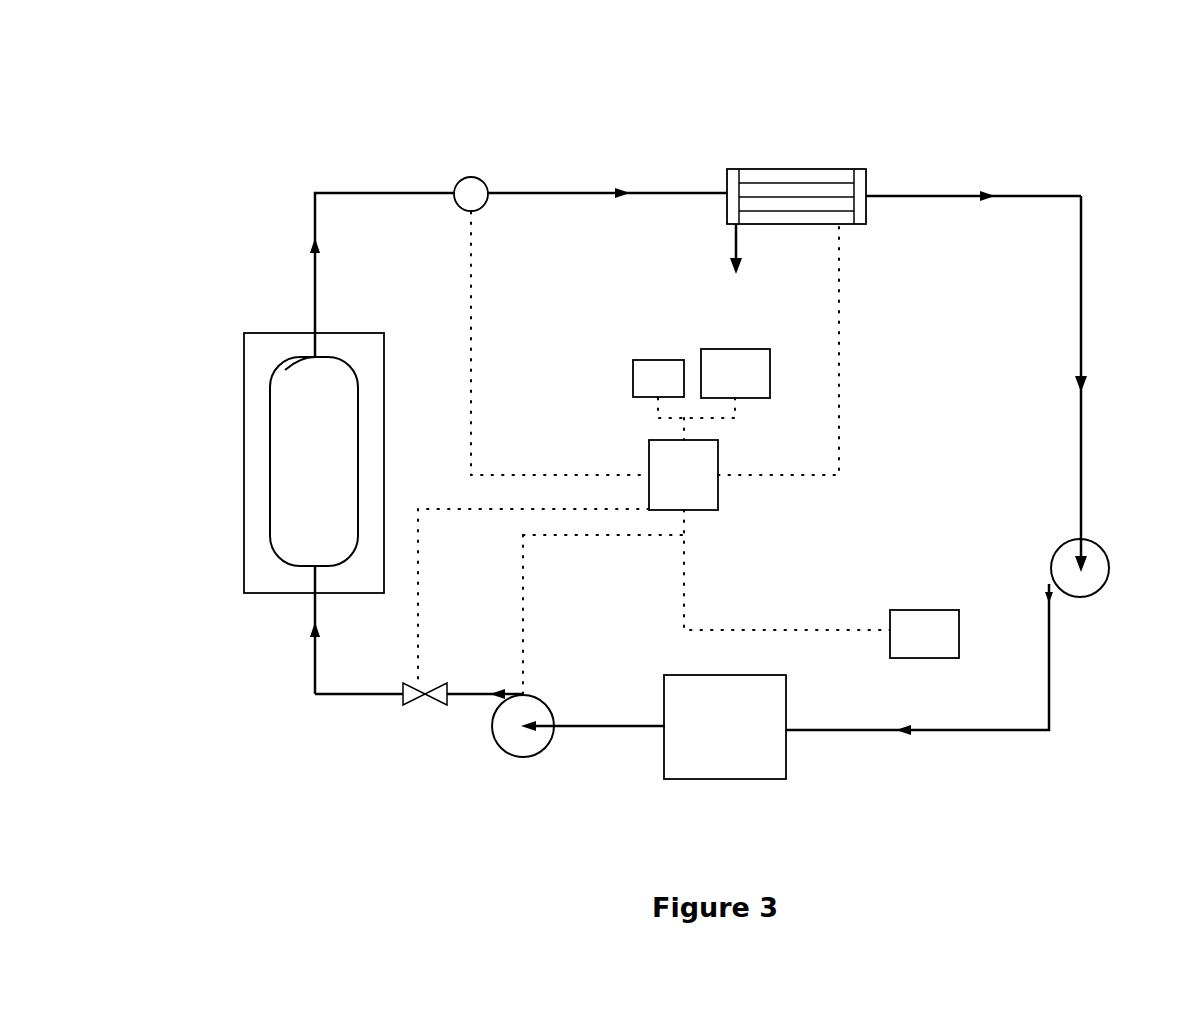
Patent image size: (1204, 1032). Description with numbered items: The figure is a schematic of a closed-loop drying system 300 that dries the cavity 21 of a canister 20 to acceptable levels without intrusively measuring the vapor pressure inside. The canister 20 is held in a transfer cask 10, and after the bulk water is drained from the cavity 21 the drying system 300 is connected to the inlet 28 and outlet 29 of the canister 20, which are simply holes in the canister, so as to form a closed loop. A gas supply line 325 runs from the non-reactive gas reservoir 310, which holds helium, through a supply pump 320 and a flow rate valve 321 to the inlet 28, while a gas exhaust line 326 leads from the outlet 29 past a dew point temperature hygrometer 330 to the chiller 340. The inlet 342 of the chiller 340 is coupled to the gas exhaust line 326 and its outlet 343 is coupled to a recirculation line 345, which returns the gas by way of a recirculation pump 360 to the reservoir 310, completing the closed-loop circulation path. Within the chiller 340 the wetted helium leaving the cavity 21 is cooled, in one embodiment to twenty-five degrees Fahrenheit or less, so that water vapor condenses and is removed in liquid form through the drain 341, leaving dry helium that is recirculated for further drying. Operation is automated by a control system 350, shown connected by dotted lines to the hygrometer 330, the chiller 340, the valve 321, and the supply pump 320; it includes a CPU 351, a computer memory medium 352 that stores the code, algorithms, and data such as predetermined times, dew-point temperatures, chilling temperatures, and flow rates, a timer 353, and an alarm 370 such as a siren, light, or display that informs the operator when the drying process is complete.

The transfer cask 10 is at (244, 462).
The canister 20 is at (270, 383).
The cavity 21 is at (323, 410).
The inlet 28 is at (312, 570).
The outlet 29 is at (305, 357).
The closed-loop drying system 300 is at (1090, 127).
The non-reactive gas reservoir 310 is at (768, 779).
The supply pump 320 is at (543, 748).
The flow rate valve 321 is at (403, 705).
The gas supply line 325 is at (355, 696).
The gas exhaust line 326 is at (313, 233).
The dew point temperature hygrometer 330 is at (475, 177).
The chiller 340 is at (795, 168).
The drain 341 is at (737, 238).
The inlet of the chiller 342 is at (722, 193).
The outlet of the chiller 343 is at (871, 193).
The recirculation line 345 is at (1082, 325).
The control system 350 is at (812, 412).
The CPU 351 is at (718, 510).
The computer memory medium 352 is at (658, 360).
The timer 353 is at (735, 349).
The recirculation pump 360 is at (1058, 545).
The alarm 370 is at (930, 610).